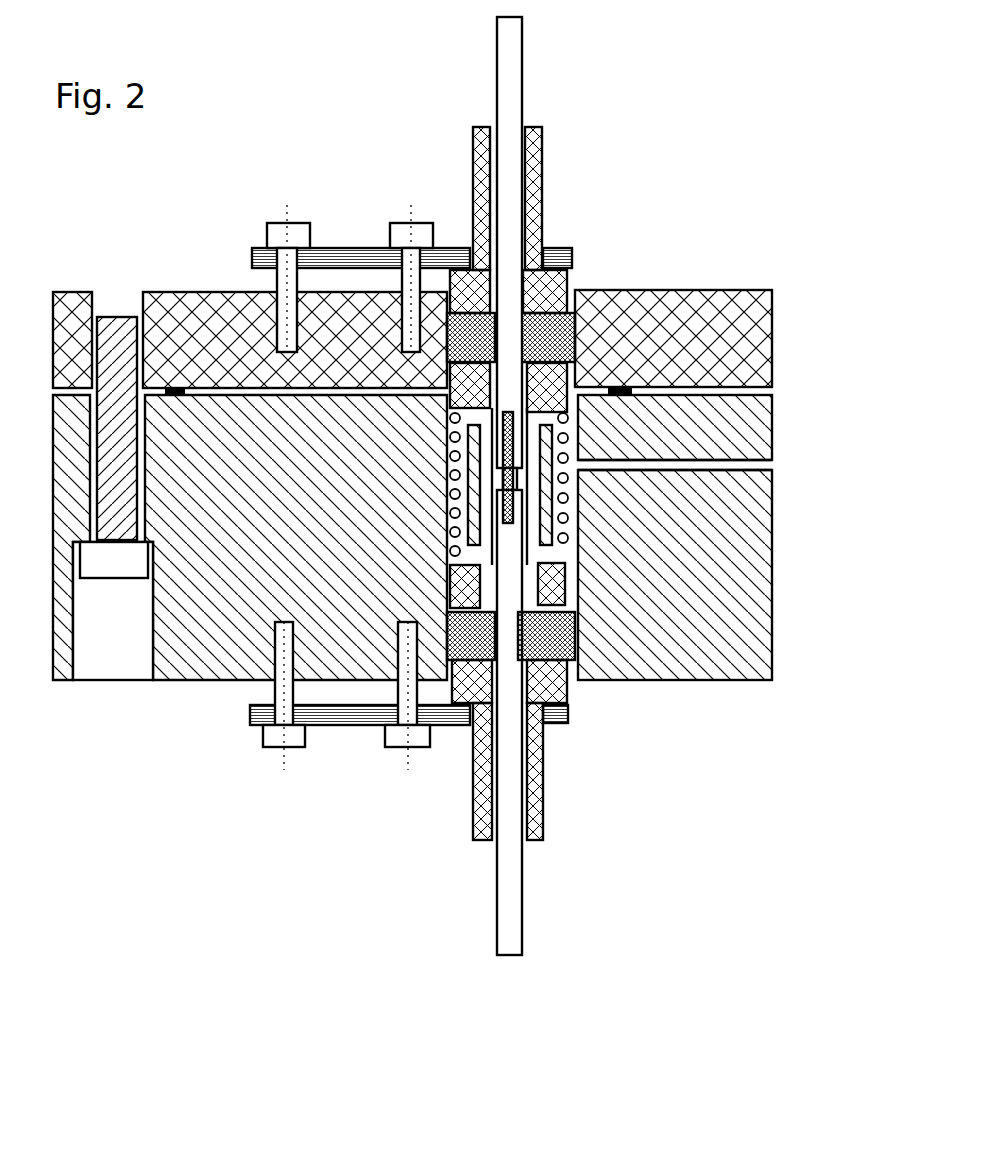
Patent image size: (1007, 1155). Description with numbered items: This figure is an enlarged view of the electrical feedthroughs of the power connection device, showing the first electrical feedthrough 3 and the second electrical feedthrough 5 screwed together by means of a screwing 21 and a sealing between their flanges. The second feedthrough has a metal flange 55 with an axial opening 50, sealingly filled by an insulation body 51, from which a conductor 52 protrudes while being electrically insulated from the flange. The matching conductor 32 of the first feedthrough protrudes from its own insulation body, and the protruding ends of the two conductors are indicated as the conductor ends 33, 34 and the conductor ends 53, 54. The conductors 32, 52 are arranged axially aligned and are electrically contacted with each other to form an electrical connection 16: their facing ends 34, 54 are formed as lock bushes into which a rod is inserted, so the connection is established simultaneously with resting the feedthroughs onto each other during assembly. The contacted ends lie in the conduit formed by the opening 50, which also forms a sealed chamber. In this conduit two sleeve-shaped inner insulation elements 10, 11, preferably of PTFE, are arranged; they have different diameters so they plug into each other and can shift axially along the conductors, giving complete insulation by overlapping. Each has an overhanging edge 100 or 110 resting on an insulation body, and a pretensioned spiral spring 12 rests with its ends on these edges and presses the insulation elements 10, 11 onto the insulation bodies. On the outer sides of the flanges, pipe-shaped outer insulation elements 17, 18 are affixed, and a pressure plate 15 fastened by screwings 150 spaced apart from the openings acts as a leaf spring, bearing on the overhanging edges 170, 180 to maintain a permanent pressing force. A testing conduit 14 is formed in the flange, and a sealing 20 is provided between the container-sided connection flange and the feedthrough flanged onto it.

The first electrical feedthrough 3 is at (670, 188).
The second electrical feedthrough 5 is at (196, 952).
The inner insulation element 10 is at (440, 558).
The overhanging edge 100 is at (435, 590).
The inner insulation element 11 is at (577, 378).
The overhanging edge 110 is at (215, 292).
The spiral spring 12 is at (773, 360).
The testing conduit 14 is at (680, 457).
The pressure plate 15 is at (362, 248).
The screwing 150 is at (287, 222).
The electrical connection 16 is at (577, 480).
The outer insulation element 17 is at (473, 160).
The overhanging edge 170 is at (455, 247).
The outer insulation element 18 is at (543, 822).
The overhanging edge 180 is at (470, 723).
The sealing 20 is at (133, 353).
The screwing 21 is at (115, 562).
The conductor 32 is at (542, 265).
The conductor end 33 is at (508, 38).
The conductor end 34 is at (578, 358).
The opening 50 is at (530, 535).
The insulation body 51 is at (582, 650).
The conductor 52 is at (562, 682).
The conductor end 53 is at (508, 935).
The conductor end 54 is at (580, 625).
The metal flange 55 is at (58, 682).